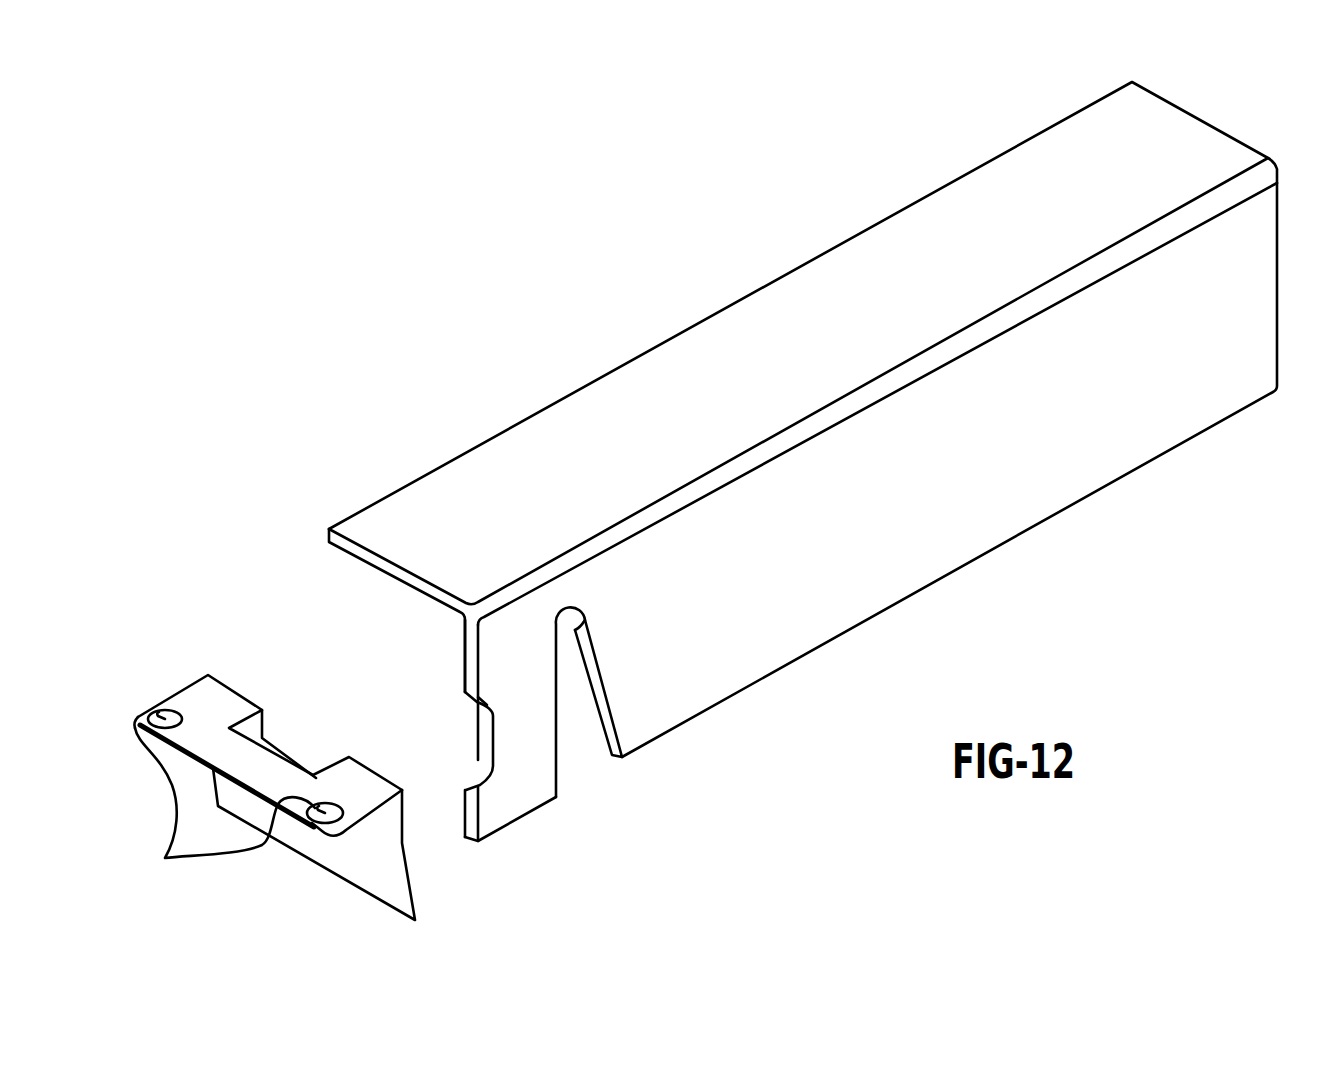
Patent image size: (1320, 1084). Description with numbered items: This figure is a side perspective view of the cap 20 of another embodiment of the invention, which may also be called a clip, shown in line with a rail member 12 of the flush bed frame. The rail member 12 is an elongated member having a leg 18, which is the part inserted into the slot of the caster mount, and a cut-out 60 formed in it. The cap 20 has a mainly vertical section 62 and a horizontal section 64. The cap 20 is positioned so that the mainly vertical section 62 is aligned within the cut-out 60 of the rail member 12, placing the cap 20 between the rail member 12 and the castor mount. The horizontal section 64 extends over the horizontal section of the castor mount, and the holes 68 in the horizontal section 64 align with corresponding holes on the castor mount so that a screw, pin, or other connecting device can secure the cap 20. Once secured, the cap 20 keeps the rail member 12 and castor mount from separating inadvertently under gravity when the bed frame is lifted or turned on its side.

The rail member 12 is at (803, 481).
The leg 18 is at (518, 782).
The cap 20 is at (265, 729).
The cut-out 60 is at (485, 755).
The mainly vertical section 62 is at (387, 813).
The horizontal section 64 is at (172, 658).
The holes 68 is at (225, 807).